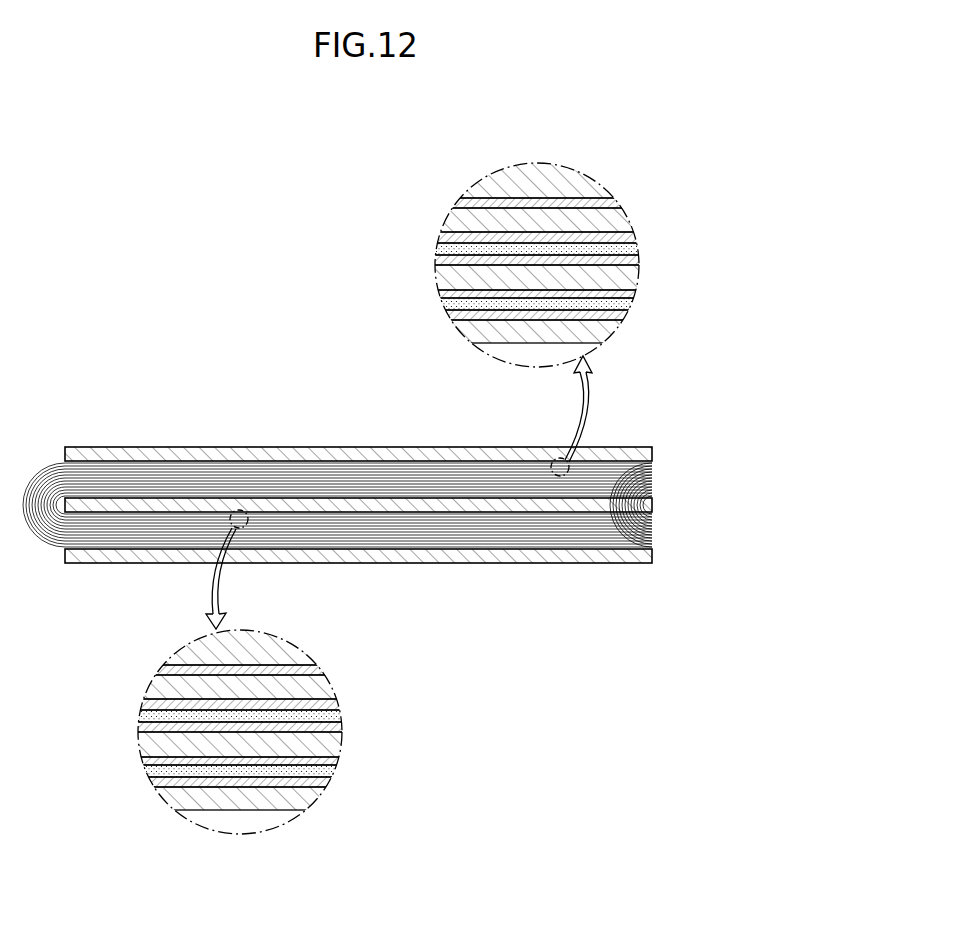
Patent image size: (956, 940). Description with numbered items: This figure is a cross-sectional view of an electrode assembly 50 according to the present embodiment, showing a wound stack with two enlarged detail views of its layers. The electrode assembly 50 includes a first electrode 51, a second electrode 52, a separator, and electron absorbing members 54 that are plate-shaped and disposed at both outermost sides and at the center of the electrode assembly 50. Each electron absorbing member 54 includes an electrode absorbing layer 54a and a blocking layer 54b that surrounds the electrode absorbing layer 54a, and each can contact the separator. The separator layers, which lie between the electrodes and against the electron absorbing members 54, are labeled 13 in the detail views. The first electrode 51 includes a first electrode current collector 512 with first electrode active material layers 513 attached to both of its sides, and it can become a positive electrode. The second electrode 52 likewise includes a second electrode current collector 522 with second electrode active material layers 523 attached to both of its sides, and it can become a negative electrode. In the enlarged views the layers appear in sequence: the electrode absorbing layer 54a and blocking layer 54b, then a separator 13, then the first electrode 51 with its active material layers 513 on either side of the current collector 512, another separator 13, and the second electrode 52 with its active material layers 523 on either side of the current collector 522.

The electrode assembly 50 is at (248, 426).
The electron absorbing member 54 is at (193, 457).
The electrode absorbing layer 54a is at (487, 183).
The blocking layer 54b is at (458, 200).
The separator 13 is at (460, 221).
The first electrode 51 is at (702, 205).
The first electrode current collector 512 is at (627, 248).
The first electrode active material layer 513 is at (630, 237).
The second electrode 52 is at (378, 293).
The second electrode current collector 522 is at (450, 305).
The second electrode active material layer 523 is at (442, 294).